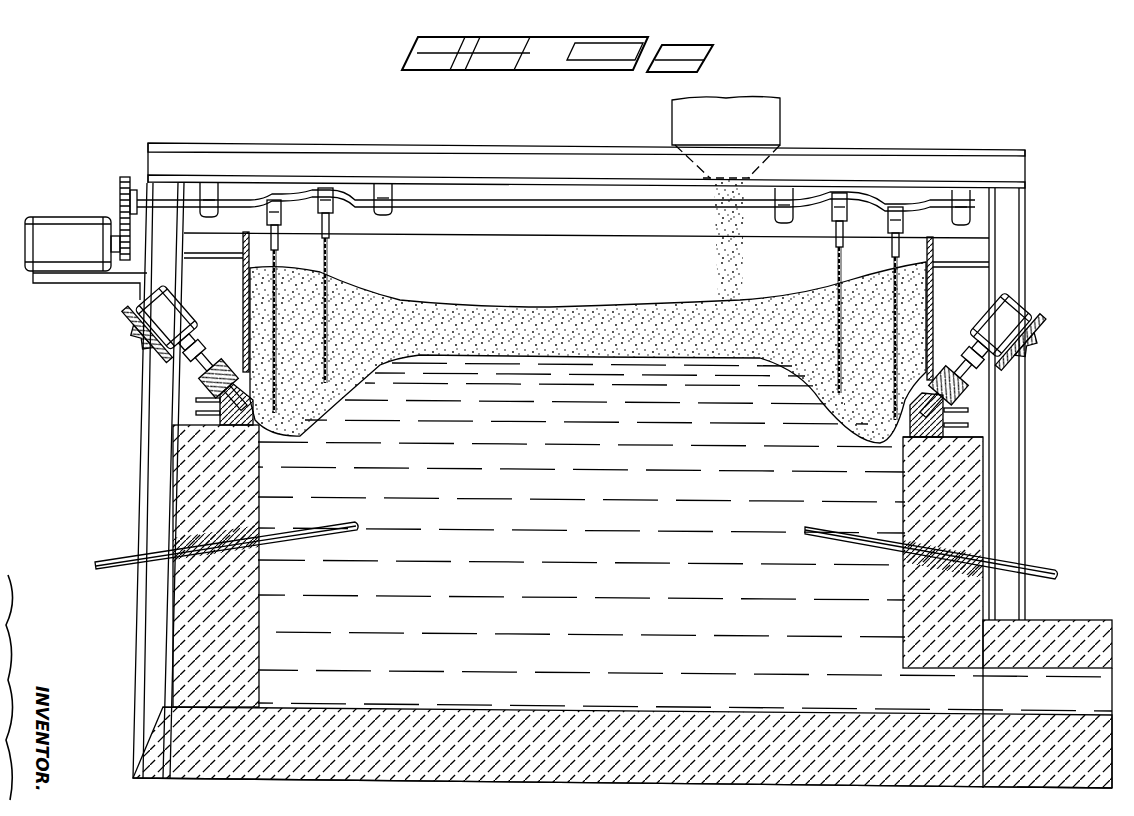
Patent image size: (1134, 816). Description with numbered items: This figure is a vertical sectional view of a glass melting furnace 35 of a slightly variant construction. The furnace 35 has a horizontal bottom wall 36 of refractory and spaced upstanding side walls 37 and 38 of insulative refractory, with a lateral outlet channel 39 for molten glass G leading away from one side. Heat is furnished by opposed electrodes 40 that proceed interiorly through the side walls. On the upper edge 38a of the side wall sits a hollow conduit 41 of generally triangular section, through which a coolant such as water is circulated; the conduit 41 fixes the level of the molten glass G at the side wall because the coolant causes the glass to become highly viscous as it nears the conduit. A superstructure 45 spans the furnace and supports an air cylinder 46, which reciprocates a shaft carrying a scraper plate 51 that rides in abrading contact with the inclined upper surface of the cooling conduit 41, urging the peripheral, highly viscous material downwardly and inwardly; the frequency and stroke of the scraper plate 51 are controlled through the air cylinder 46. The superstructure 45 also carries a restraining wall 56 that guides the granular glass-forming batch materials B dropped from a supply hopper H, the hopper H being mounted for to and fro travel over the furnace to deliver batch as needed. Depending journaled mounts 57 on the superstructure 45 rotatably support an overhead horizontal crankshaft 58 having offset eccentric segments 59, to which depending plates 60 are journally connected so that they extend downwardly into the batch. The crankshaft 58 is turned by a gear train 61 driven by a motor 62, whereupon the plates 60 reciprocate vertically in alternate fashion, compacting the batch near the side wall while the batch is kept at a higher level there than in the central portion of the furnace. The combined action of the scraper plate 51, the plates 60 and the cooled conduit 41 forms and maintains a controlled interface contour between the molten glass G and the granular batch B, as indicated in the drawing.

The furnace 35 is at (1042, 262).
The bottom wall 36 is at (192, 736).
The side wall 37 is at (190, 488).
The side wall 38 is at (968, 482).
The upper edge 38a is at (970, 437).
The lateral outlet channel 39 is at (1058, 677).
The electrode 40 is at (1040, 567).
The conduit 41 is at (205, 393).
The superstructure 45 is at (1025, 200).
The air cylinder 46 is at (152, 303).
The scraper plate 51 is at (218, 346).
The restraining wall 56 is at (244, 272).
The journaled mounts 57 is at (212, 183).
The crankshaft 58 is at (497, 205).
The eccentric segments 59 is at (886, 210).
The plates 60 is at (327, 300).
The gear train 61 is at (122, 200).
The motor 62 is at (48, 233).
The supply hopper H is at (760, 97).
The batch materials B is at (568, 307).
The molten glass G is at (620, 372).